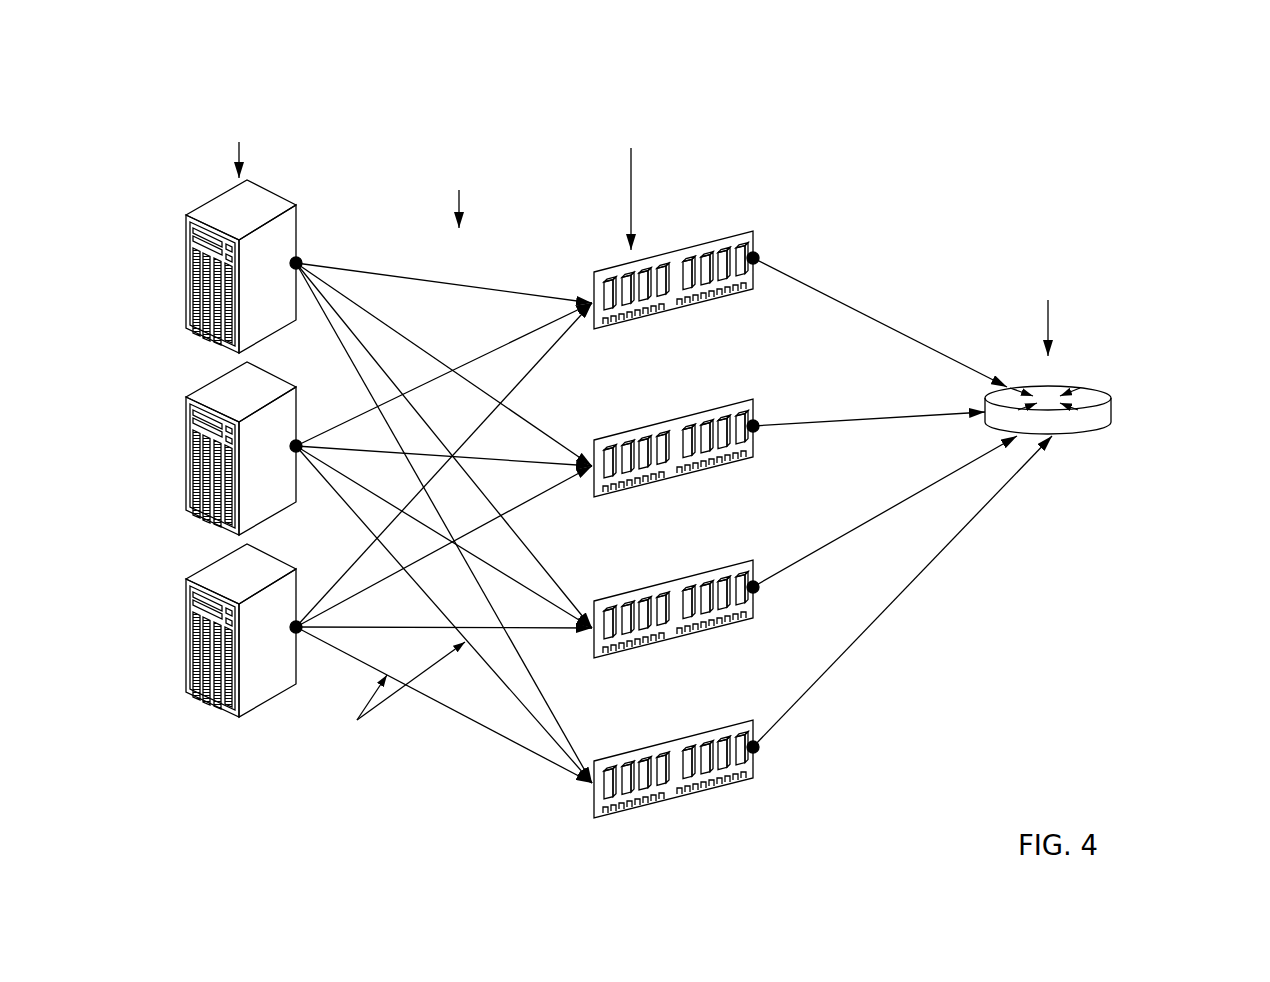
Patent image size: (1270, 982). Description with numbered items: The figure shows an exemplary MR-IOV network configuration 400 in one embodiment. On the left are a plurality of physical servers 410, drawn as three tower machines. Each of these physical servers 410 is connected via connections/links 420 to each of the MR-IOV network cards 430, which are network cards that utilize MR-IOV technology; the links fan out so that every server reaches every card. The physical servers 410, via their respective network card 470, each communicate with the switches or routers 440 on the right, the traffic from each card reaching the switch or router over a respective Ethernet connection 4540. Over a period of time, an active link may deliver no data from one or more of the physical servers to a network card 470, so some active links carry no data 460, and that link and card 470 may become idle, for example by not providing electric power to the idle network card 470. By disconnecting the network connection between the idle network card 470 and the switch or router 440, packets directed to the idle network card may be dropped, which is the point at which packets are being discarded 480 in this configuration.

The network configuration 400 is at (941, 49).
The physical servers 410 is at (238, 126).
The connections/links 420 is at (450, 173).
The MR-IOV network cards 430 is at (693, 128).
The switches or routers 440 is at (1120, 287).
The ethernet connection 4540 is at (1173, 615).
The active links with no data 460 is at (258, 742).
The network card 470 is at (873, 848).
The packets being discarded 480 is at (966, 204).